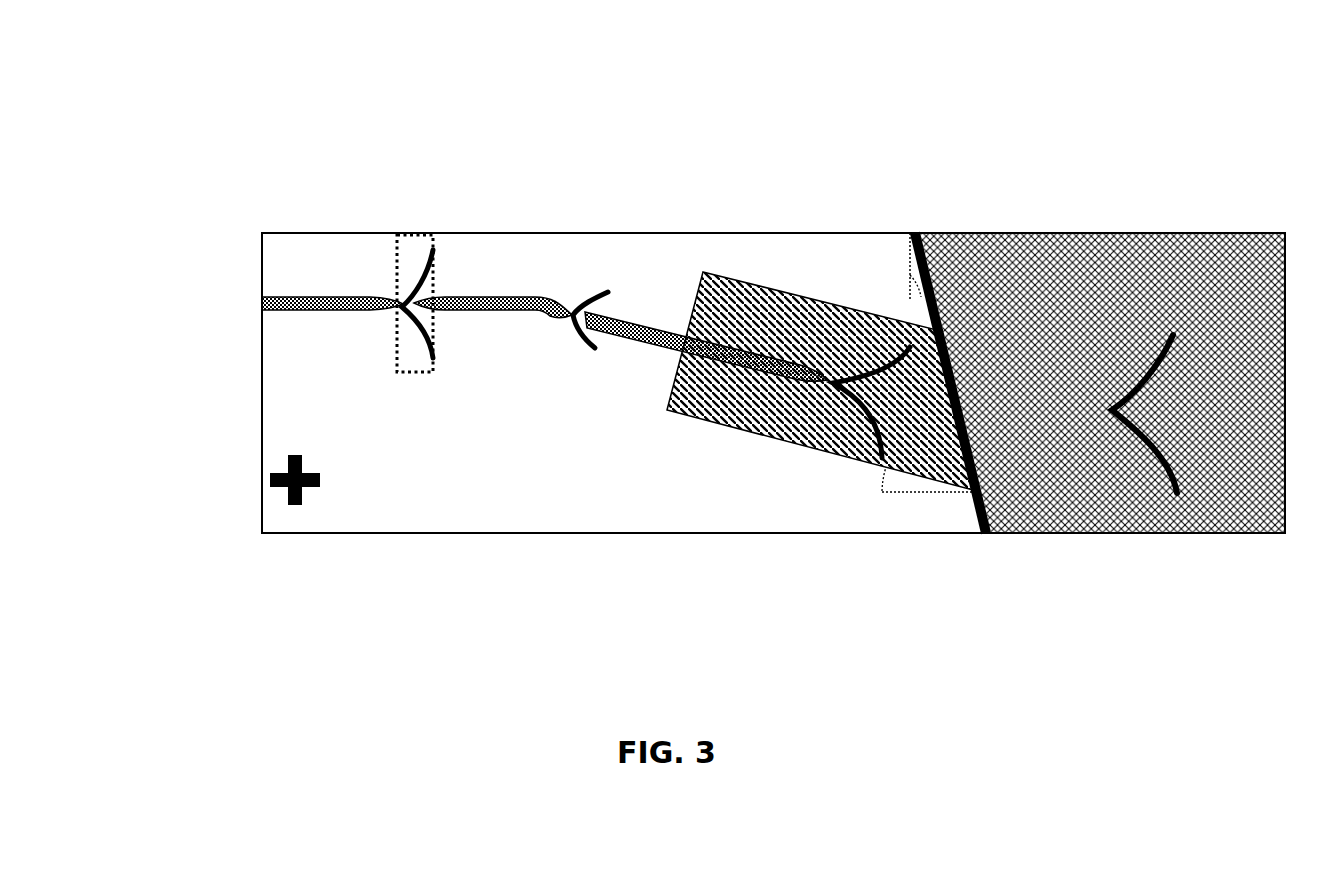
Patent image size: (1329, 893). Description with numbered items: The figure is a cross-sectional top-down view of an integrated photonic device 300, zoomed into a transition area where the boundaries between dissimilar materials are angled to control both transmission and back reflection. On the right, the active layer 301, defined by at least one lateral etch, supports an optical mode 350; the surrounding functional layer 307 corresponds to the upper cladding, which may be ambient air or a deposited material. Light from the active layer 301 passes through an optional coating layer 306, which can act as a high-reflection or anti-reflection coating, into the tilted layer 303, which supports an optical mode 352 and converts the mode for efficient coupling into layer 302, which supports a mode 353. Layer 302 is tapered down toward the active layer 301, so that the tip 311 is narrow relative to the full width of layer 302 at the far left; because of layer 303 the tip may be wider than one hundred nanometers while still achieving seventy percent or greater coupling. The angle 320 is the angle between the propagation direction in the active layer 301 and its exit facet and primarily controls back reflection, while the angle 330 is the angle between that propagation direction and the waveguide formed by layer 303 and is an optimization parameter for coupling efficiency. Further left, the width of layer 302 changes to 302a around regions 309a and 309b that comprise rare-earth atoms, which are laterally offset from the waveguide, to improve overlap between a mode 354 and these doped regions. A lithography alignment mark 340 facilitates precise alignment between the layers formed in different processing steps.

The integrated photonic device 300 is at (172, 105).
The active layer 301 is at (1082, 232).
The layer 302 is at (558, 300).
The changed width of layer 302 302a is at (432, 300).
The layer 303 is at (731, 274).
The coating layer 306 is at (913, 238).
The functional layer 307 is at (258, 387).
The region comprising rare-earth atoms 309a is at (397, 338).
The region comprising rare-earth atoms 309b is at (398, 252).
The tip 311 is at (827, 378).
The angle 320 is at (940, 237).
The angle 330 is at (915, 482).
The lithography alignment mark 340 is at (288, 487).
The optical mode 350 is at (1178, 497).
The optical mode 352 is at (857, 450).
The mode 353 is at (595, 352).
The mode 354 is at (434, 365).